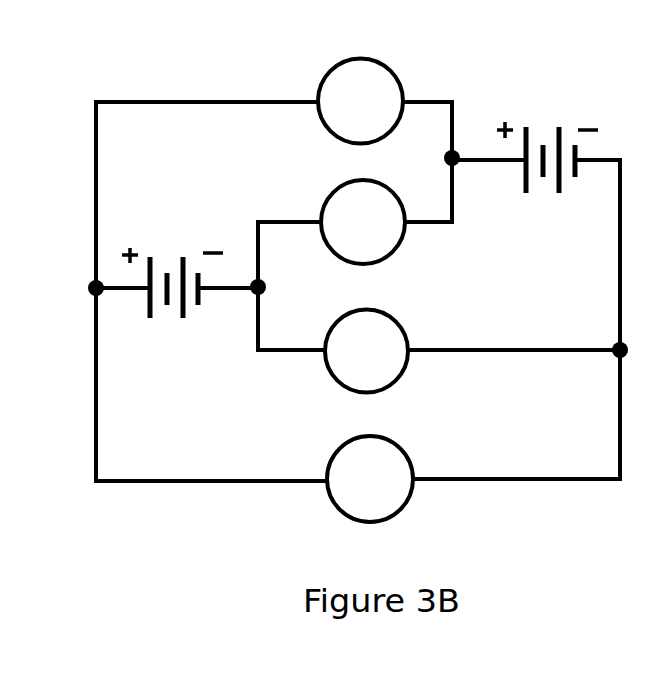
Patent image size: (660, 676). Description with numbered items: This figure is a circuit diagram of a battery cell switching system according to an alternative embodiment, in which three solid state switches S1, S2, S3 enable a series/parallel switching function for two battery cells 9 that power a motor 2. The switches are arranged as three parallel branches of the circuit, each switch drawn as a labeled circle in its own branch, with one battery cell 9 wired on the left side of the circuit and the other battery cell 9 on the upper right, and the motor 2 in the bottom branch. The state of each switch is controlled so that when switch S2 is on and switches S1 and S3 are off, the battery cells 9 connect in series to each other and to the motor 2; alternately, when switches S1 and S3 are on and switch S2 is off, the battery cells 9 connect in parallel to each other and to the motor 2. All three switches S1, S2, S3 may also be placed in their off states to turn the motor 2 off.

The motor 2 is at (316, 501).
The battery cells 9 is at (175, 330).
The solid state switch S1 is at (360, 101).
The solid state switch S2 is at (363, 222).
The solid state switch S3 is at (366, 351).